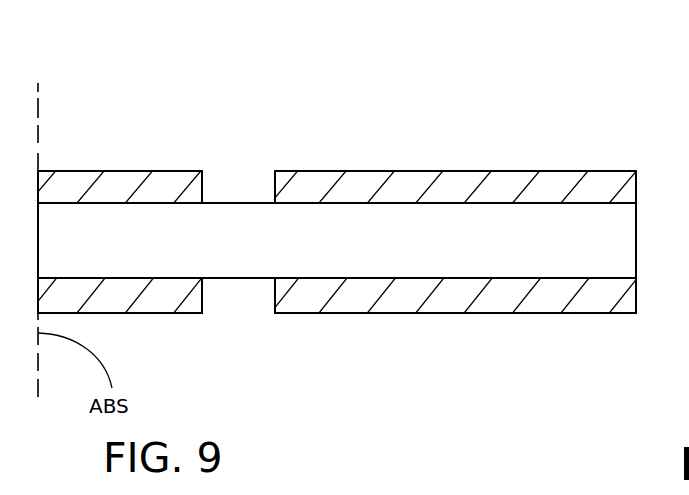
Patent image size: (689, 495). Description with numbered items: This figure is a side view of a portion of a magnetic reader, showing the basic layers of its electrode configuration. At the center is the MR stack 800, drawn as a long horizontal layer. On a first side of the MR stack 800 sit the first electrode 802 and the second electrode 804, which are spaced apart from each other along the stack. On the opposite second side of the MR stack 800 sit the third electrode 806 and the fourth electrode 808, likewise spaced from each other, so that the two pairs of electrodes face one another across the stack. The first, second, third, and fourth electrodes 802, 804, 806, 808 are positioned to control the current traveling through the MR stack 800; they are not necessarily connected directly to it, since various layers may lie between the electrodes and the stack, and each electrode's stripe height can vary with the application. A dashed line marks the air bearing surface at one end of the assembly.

The MR stack 800 is at (220, 240).
The first electrode 802 is at (120, 187).
The second electrode 804 is at (508, 188).
The third electrode 806 is at (390, 297).
The fourth electrode 808 is at (148, 305).